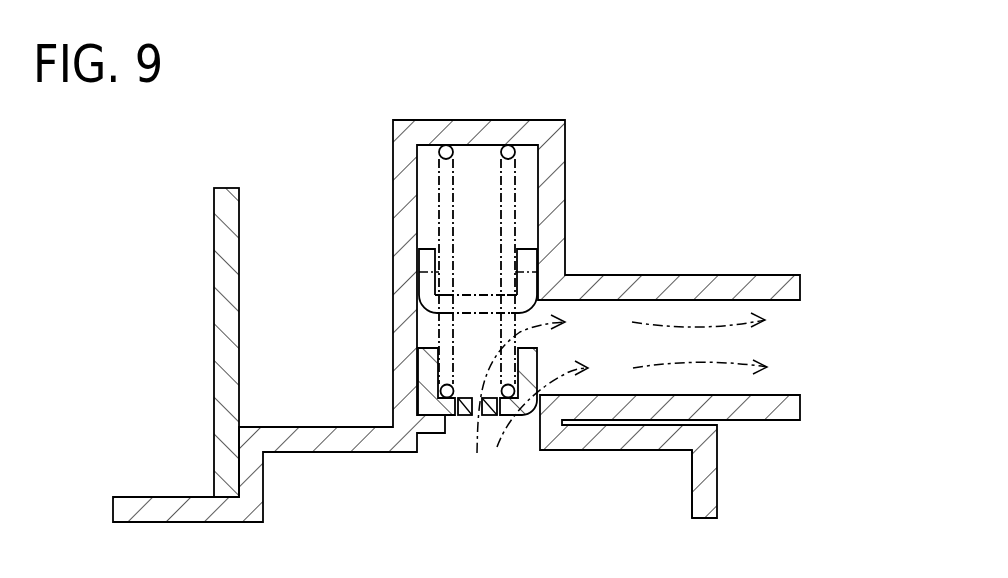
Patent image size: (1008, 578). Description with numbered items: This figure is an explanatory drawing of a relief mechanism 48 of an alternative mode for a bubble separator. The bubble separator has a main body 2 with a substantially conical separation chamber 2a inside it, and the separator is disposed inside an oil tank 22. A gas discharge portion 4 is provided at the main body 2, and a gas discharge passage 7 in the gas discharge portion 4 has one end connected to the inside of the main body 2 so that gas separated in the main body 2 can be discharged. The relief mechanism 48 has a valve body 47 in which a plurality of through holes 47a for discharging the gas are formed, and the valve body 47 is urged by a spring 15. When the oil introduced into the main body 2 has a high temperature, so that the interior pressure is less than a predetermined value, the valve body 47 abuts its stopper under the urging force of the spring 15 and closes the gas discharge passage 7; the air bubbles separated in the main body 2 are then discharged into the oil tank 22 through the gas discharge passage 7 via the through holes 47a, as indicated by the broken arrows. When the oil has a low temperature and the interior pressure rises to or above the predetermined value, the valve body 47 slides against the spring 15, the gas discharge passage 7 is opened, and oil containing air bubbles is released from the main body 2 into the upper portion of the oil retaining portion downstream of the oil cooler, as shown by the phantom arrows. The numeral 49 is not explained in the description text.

The main body 2 is at (710, 477).
The separation chamber 2a is at (659, 492).
The gas discharge portion 4 is at (456, 328).
The gas discharge passage 7 is at (589, 330).
The spring 15 is at (515, 193).
The oil tank 22 is at (226, 329).
The valve body 47 is at (418, 384).
The through holes 47a is at (461, 416).
The relief mechanism 48 is at (380, 232).
The retaining ball 49 is at (449, 406).